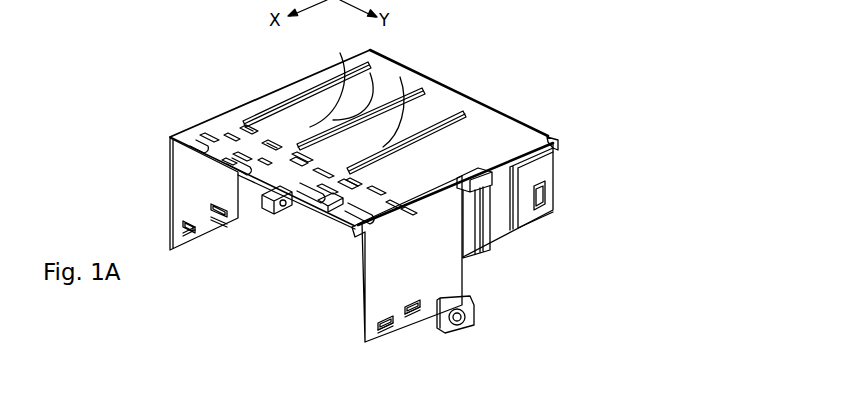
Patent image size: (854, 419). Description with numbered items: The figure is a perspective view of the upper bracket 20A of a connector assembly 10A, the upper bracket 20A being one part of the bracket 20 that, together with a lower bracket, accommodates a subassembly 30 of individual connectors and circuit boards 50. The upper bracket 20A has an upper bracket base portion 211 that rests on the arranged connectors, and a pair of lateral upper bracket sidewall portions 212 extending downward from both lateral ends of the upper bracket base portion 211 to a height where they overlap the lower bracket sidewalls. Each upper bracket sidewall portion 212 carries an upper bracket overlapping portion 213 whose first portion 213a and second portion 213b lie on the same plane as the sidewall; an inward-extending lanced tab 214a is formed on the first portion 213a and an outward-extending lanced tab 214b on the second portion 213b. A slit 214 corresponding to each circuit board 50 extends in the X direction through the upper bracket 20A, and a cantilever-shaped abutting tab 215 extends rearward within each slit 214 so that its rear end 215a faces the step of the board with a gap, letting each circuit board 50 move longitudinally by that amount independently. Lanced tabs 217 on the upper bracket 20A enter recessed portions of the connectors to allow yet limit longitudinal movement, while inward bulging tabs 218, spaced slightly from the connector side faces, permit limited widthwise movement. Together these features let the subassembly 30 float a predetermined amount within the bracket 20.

The connector assembly 10A is at (633, 348).
The bracket 20 is at (335, 210).
The upper bracket 20A is at (447, 68).
The subassembly 30 is at (520, 418).
The circuit board 50 is at (384, 357).
The upper bracket base portion 211 is at (403, 112).
The upper bracket sidewall portion 212 is at (177, 218).
The upper bracket overlapping portion 213 is at (245, 273).
The first portion 213a is at (225, 225).
The second portion 213b is at (193, 237).
The slit 214 is at (348, 62).
The lanced tab 214a is at (214, 208).
The lanced tab 214b is at (193, 222).
The abutting tab 215 is at (262, 83).
The rear end 215a is at (320, 83).
The lanced tab 217 is at (388, 190).
The bulging tab 218 is at (333, 212).